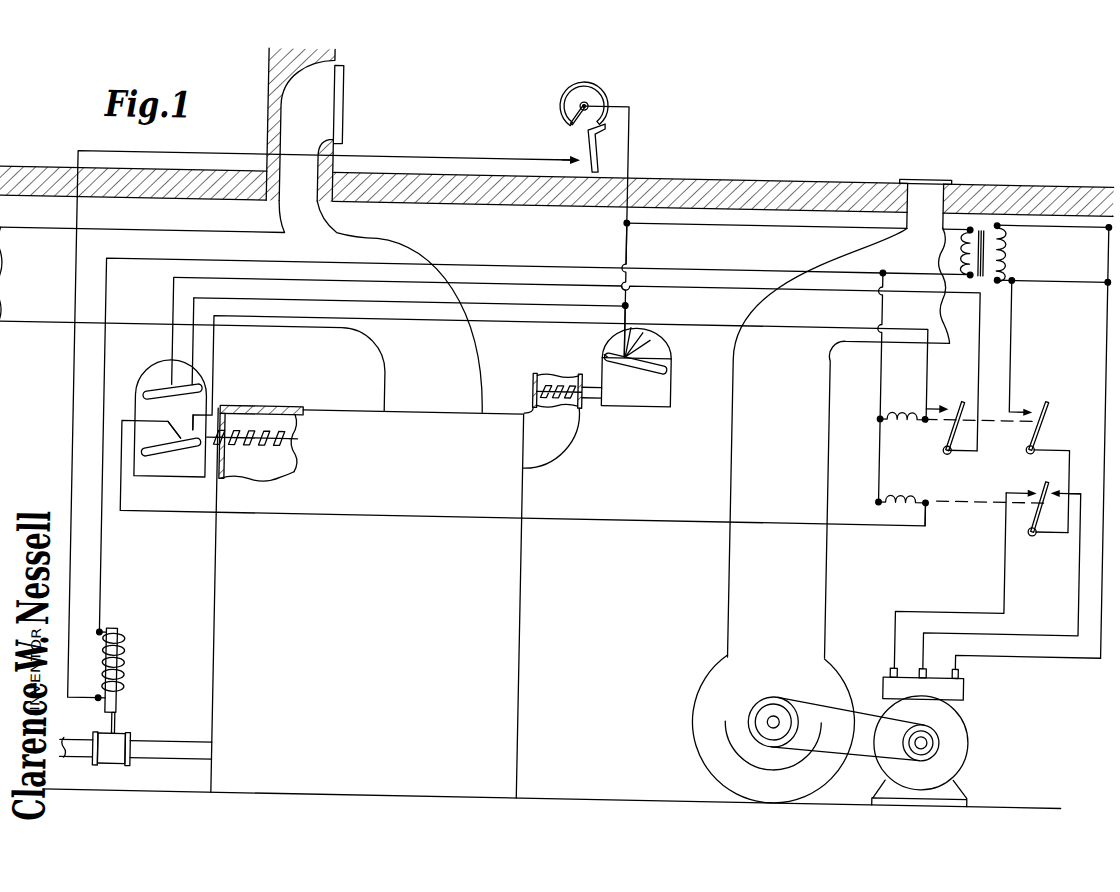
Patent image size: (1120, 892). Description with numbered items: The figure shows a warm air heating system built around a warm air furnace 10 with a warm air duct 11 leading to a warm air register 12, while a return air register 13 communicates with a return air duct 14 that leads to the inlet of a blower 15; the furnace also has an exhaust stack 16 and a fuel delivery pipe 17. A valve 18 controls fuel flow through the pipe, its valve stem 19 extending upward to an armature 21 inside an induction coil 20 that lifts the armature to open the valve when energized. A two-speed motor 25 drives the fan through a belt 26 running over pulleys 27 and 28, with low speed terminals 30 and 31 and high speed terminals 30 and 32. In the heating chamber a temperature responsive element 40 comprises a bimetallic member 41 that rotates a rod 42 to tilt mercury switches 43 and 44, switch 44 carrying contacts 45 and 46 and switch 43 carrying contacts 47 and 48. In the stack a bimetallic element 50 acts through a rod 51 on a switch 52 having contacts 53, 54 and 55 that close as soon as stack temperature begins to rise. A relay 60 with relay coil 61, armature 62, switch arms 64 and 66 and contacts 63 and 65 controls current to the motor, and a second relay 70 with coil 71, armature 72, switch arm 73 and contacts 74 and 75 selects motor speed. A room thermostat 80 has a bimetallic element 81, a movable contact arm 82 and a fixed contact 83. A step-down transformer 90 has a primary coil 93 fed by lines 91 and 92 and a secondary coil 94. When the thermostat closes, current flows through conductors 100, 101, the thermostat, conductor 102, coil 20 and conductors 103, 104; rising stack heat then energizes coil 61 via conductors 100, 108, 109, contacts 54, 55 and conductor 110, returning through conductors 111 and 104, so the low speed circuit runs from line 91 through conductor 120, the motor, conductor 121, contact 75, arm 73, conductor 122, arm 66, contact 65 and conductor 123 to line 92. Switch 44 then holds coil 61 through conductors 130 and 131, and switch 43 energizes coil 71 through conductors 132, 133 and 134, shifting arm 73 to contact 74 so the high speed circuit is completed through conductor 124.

The warm air furnace 10 is at (359, 641).
The warm air duct 11 is at (419, 357).
The warm air register 12 is at (346, 98).
The return air register 13 is at (922, 161).
The return air duct 14 is at (771, 442).
The blower 15 is at (712, 677).
The exhaust stack 16 is at (578, 434).
The fuel delivery pipe 17 is at (195, 737).
The valve 18 is at (120, 763).
The valve stem 19 is at (129, 716).
The induction coil 20 is at (140, 652).
The armature 21 is at (132, 630).
The motor 25 is at (989, 729).
The belt 26 is at (873, 741).
The motor pulley 27 is at (948, 745).
The fan pulley 28 is at (791, 680).
The motor terminal 30 is at (965, 650).
The low speed terminal 31 is at (935, 650).
The high speed terminal 32 is at (903, 654).
The temperature responsive element 40 is at (266, 418).
The bimetallic member 41 is at (270, 449).
The rod 42 is at (304, 431).
The mercury switch 43 is at (189, 450).
The mercury switch 44 is at (154, 380).
The contact 45 is at (177, 376).
The contact 46 is at (199, 380).
The contact 47 is at (182, 435).
The contact 48 is at (194, 424).
The bimetallic element 50 is at (570, 372).
The rod 51 is at (576, 394).
The switch 52 is at (682, 345).
The contact 53 is at (611, 344).
The contact 54 is at (636, 328).
The contact 55 is at (666, 333).
The relay 60 is at (998, 374).
The relay coil 61 is at (915, 416).
The armature 62 is at (1010, 415).
The contact 63 is at (961, 382).
The switch arm 64 is at (957, 425).
The contact 65 is at (1047, 374).
The switch arm 66 is at (1058, 405).
The second relay 70 is at (968, 465).
The coil 71 is at (917, 474).
The armature 72 is at (971, 491).
The switch arm 73 is at (1042, 498).
The contact 74 is at (1034, 470).
The contact 75 is at (1068, 461).
The thermostat 80 is at (610, 75).
The bimetallic element 81 is at (563, 80).
The movable contact arm 82 is at (601, 138).
The fixed contact 83 is at (574, 142).
The step-down transformer 90 is at (986, 194).
The line 91 is at (1074, 208).
The line 92 is at (1087, 260).
The high tension primary coil 93 is at (1010, 236).
The low tension secondary coil 94 is at (973, 216).
The conductor 100 is at (769, 213).
The conductor 101 is at (633, 140).
The conductor 102 is at (451, 150).
The conductor 103 is at (713, 255).
The conductor 104 is at (915, 253).
The conductor 108 is at (629, 238).
The conductor 109 is at (626, 310).
The conductor 110 is at (824, 309).
The conductor 111 is at (888, 361).
The conductor 120 is at (1110, 350).
The conductor 121 is at (1051, 604).
The conductor 122 is at (1090, 432).
The conductor 123 is at (1019, 318).
The conductor 124 is at (1016, 545).
The conductor 130 is at (363, 292).
The conductor 131 is at (325, 273).
The conductor 132 is at (406, 311).
The conductor 133 is at (383, 507).
The conductor 134 is at (887, 447).